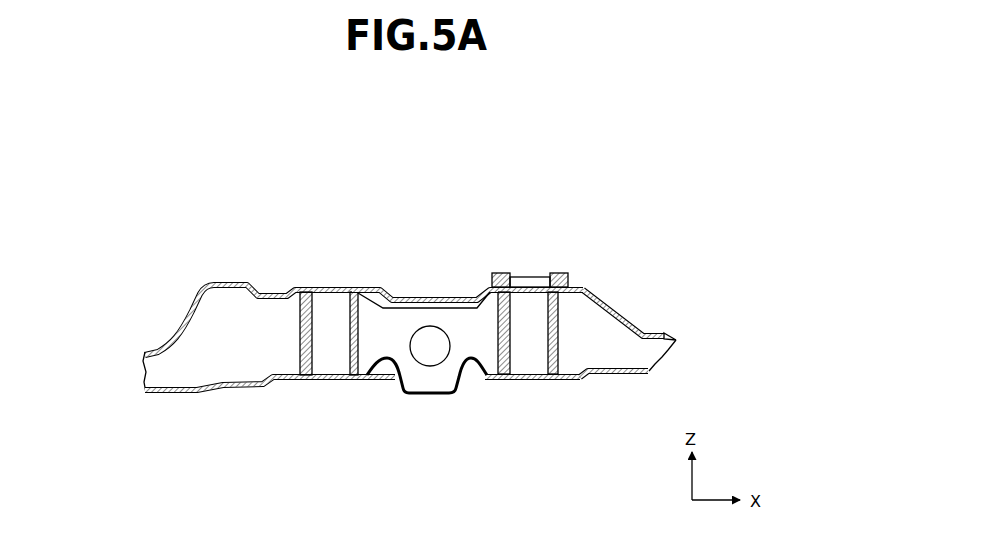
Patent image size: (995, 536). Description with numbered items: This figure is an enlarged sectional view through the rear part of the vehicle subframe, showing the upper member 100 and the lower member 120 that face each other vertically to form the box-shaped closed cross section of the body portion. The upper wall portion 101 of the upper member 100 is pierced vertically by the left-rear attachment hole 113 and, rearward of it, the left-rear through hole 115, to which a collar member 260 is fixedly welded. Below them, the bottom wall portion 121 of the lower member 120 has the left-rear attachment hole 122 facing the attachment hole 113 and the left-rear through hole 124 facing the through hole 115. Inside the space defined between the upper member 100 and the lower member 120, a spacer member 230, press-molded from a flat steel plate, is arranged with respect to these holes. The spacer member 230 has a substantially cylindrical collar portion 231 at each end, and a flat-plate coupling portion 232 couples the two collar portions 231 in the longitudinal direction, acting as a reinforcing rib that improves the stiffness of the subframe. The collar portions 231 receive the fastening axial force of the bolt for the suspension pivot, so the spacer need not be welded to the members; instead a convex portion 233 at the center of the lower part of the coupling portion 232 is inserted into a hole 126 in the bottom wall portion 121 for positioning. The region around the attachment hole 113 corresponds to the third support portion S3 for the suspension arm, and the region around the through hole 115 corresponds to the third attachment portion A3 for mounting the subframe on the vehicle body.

The upper member 100 is at (418, 337).
The upper wall portion 101 is at (217, 283).
The left-rear attachment hole 113 is at (321, 253).
The left-rear through hole 115 is at (524, 253).
The lower member 120 is at (235, 400).
The bottom wall portion 121 is at (633, 375).
The left-rear attachment hole 122 is at (320, 421).
The left-rear through hole 124 is at (542, 422).
The hole 126 is at (395, 380).
The spacer member 230 is at (405, 369).
The collar portion 231 is at (300, 345).
The coupling portion 232 is at (410, 320).
The convex portion 233 is at (453, 390).
The collar member 260 is at (557, 275).
The third support portion S3 is at (353, 203).
The third attachment portion A3 is at (552, 208).